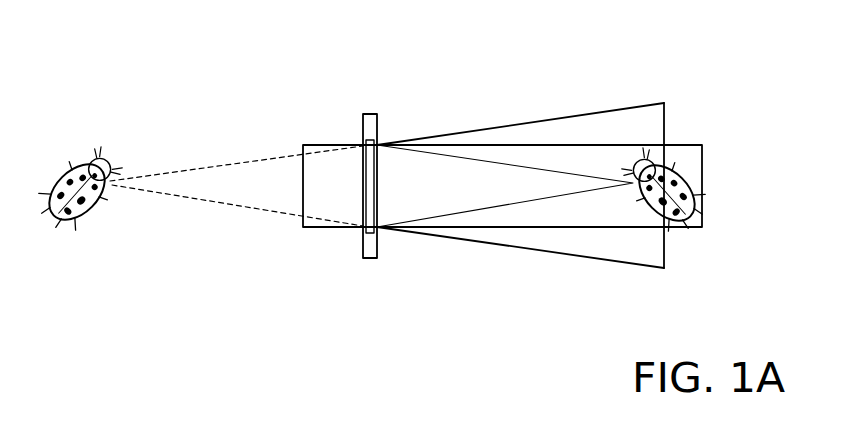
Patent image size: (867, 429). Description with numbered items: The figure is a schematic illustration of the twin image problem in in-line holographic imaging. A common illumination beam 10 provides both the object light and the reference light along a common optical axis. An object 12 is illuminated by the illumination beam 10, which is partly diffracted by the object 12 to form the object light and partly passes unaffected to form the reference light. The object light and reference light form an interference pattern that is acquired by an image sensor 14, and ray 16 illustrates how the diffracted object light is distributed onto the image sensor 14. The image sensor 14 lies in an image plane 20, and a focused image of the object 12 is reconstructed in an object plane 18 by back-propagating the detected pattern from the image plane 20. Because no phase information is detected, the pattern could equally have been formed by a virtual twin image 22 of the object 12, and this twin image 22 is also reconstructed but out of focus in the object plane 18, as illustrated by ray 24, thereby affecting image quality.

The illumination beam 10 is at (703, 152).
The object 12 is at (692, 208).
The image sensor 14 is at (365, 228).
The ray 16 is at (527, 205).
The object plane 18 is at (664, 103).
The image plane 20 is at (370, 113).
The virtual twin image 22 is at (83, 167).
The ray 24 is at (450, 240).